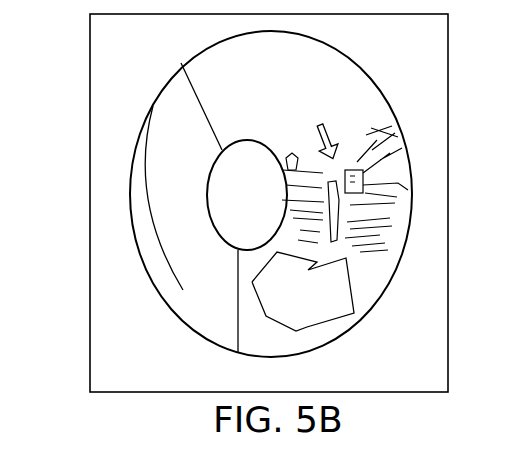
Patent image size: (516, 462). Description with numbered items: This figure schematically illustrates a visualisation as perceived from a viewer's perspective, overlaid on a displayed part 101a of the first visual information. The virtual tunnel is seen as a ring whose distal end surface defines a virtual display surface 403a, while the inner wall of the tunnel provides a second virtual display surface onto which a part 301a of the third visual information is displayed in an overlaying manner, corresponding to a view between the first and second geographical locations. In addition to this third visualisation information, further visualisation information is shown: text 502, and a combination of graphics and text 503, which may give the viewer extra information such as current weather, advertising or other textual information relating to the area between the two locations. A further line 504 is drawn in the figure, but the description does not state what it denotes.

The part of first visual information 101a is at (103, 281).
The field of view boundary line 504 is at (316, 141).
The part of third visual information 301a is at (290, 171).
The virtual display surface 403a is at (238, 222).
The text 502 is at (338, 78).
The combination of graphics and text 503 is at (347, 318).